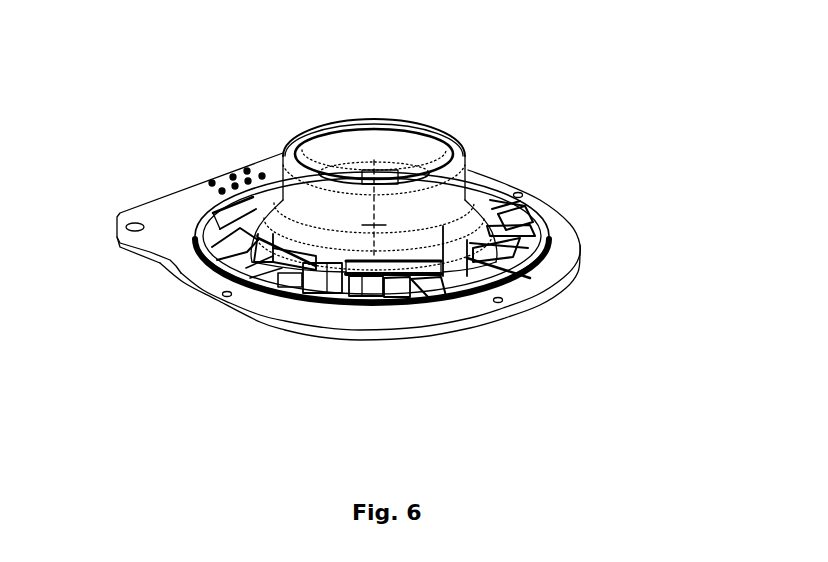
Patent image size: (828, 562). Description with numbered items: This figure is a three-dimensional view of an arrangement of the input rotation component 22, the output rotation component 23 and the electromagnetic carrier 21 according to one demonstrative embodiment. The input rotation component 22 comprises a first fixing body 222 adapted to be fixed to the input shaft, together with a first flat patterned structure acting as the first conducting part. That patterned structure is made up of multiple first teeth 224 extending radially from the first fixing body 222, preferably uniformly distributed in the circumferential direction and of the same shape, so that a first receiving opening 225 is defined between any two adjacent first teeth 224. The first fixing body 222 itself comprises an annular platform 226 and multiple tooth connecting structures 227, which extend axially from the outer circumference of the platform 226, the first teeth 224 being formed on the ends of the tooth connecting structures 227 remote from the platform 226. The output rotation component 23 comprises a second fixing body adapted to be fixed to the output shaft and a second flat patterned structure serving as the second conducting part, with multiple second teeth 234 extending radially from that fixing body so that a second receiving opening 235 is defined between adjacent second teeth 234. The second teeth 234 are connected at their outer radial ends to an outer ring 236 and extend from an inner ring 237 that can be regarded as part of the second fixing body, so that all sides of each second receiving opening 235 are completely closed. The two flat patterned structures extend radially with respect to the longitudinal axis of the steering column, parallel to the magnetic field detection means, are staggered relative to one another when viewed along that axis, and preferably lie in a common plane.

The electromagnetic carrier 21 is at (208, 282).
The input rotation component 22 is at (273, 158).
The output rotation component 23 is at (362, 282).
The first fixing body 222 is at (468, 172).
The first teeth 224 is at (238, 247).
The first receiving opening 225 is at (197, 240).
The annular platform 226 is at (440, 270).
The tooth connecting structures 227 is at (460, 270).
The second teeth 234 is at (515, 250).
The second receiving opening 235 is at (512, 208).
The outer ring 236 is at (197, 237).
The inner ring 237 is at (208, 182).